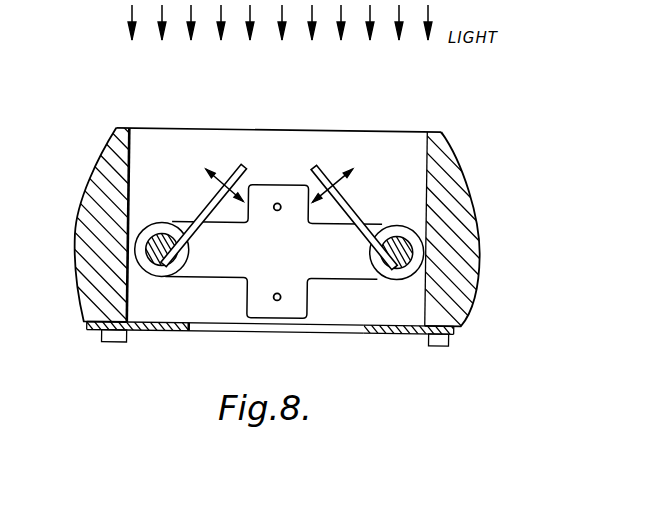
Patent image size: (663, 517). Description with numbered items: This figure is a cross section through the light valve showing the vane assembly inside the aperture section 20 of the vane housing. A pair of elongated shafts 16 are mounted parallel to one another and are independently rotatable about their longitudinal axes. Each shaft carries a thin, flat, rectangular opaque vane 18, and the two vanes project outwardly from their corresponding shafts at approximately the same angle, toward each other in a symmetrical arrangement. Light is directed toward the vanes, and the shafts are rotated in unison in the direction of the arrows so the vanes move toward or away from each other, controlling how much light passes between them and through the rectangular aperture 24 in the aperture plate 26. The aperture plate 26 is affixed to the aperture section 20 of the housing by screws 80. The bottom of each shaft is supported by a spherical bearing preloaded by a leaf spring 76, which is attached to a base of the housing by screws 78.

The shaft 16 is at (157, 235).
The vane 18 is at (213, 203).
The aperture section 20 is at (442, 208).
The aperture 24 is at (193, 333).
The aperture plate 26 is at (384, 332).
The leaf spring 76 is at (208, 280).
The screws 78 is at (276, 211).
The screws 80 is at (103, 336).